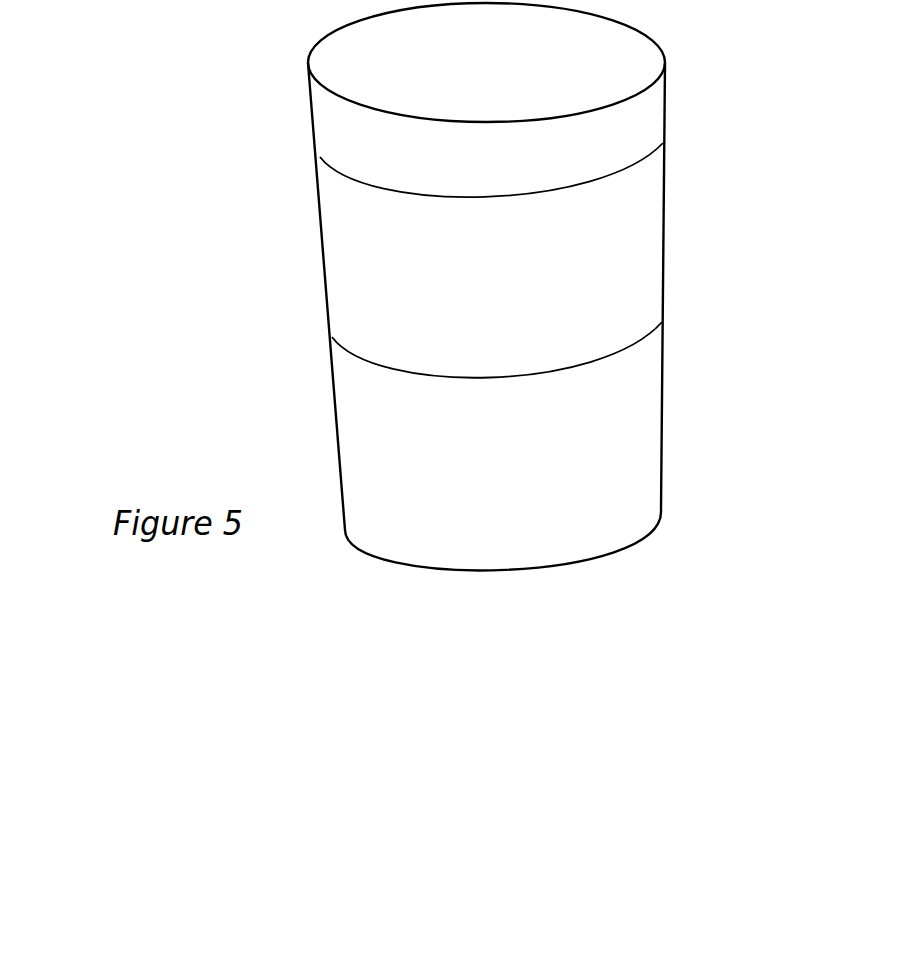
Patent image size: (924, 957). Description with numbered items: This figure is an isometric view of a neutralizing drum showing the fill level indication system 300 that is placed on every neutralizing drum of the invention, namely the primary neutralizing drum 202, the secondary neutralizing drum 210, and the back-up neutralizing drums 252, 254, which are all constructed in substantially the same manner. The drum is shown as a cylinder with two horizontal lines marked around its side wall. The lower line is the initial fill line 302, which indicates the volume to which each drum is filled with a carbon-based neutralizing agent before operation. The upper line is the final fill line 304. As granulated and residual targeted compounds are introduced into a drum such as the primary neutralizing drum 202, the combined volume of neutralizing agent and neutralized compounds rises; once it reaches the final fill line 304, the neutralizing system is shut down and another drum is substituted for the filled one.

The fill level indication system 300 is at (614, 308).
The initial fill line 302 is at (645, 343).
The final fill line 304 is at (645, 160).
The primary neutralizing drum 202 is at (614, 308).
The secondary neutralizing drum 210 is at (614, 308).
The back-up neutralizing drum 252 is at (614, 308).
The back-up neutralizing drum 254 is at (669, 277).